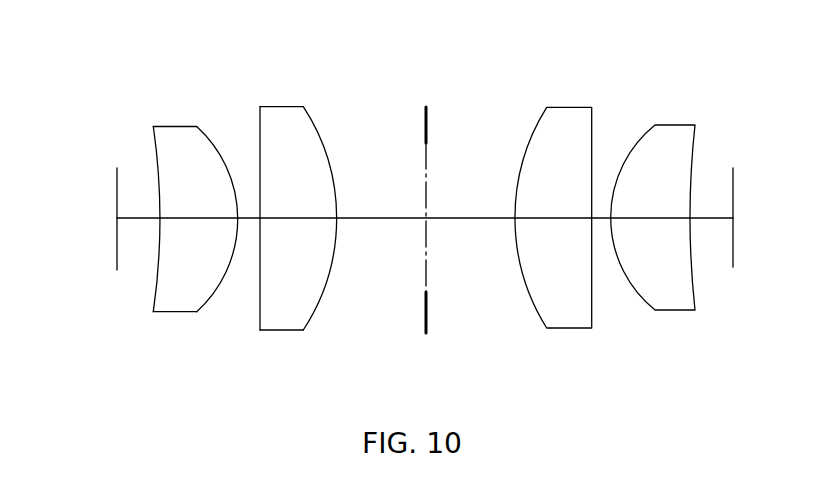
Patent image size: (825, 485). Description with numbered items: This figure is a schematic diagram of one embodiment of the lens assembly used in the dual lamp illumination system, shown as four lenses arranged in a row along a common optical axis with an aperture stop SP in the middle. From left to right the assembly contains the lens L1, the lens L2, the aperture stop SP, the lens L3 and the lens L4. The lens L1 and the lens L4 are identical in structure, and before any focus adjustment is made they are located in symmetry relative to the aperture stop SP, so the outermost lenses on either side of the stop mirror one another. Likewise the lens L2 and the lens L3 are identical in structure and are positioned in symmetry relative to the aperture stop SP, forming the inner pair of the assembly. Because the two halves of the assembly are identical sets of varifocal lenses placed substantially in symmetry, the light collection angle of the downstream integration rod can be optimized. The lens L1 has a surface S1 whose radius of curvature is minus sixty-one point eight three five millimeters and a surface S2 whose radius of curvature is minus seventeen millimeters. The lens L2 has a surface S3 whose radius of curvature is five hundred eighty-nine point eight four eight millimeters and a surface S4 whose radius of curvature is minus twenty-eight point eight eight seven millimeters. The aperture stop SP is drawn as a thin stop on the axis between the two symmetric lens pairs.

The lens L1 is at (135, 214).
The lens L2 is at (268, 213).
The lens L3 is at (570, 107).
The lens L4 is at (675, 125).
The aperture stop SP is at (427, 123).
The surface S1 is at (153, 278).
The surface S2 is at (205, 303).
The surface S3 is at (260, 272).
The surface S4 is at (333, 271).